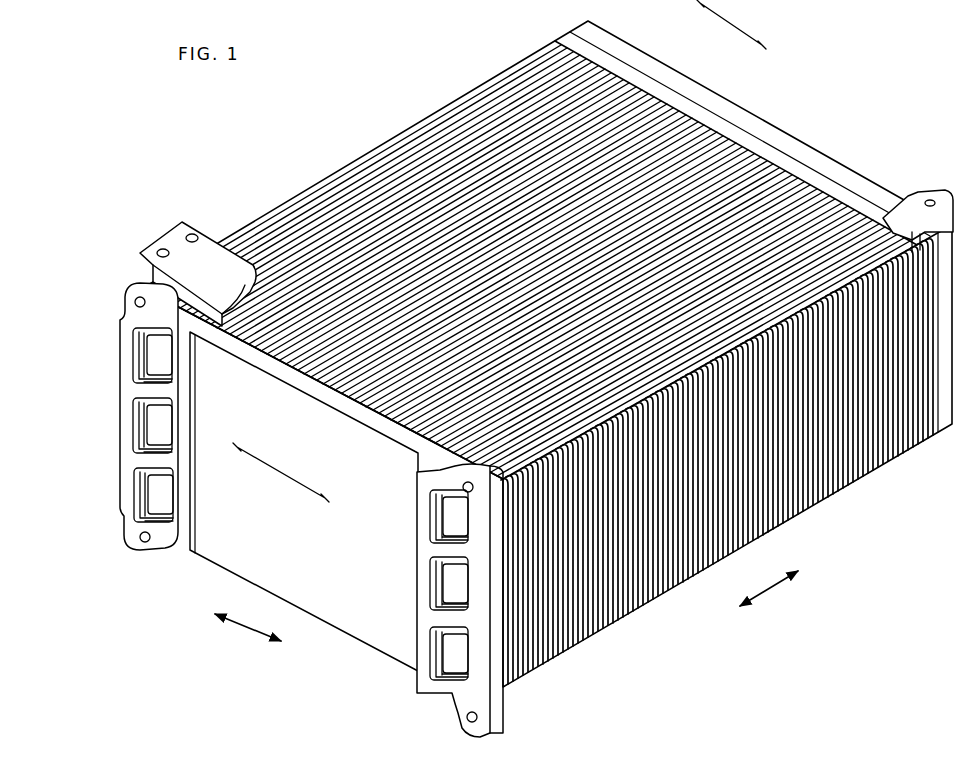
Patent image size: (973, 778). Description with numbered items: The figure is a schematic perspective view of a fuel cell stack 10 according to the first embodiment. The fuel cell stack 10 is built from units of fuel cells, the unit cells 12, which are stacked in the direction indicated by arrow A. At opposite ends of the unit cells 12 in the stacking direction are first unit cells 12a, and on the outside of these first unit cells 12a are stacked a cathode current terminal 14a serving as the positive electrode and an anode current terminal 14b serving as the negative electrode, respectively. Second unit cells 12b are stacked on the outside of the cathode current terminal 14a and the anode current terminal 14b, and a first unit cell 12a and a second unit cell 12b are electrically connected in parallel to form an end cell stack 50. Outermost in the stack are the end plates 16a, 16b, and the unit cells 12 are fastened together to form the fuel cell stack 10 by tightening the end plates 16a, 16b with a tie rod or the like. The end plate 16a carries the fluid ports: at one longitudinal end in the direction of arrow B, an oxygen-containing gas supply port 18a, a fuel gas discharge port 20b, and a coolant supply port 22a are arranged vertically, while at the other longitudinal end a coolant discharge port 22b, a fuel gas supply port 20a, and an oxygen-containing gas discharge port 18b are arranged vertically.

The fuel cell stack 10 is at (101, 143).
The unit cells 12 is at (328, 166).
The first unit cells 12a is at (289, 352).
The second unit cells 12b is at (337, 403).
The cathode current terminal 14a is at (165, 248).
The anode current terminal 14b is at (916, 218).
The end plate 16a is at (336, 612).
The end plate 16b is at (790, 106).
The oxygen-containing gas supply port 18a is at (137, 362).
The oxygen-containing gas discharge port 18b is at (456, 652).
The fuel gas supply port 20a is at (447, 586).
The fuel gas discharge port 20b is at (137, 424).
The coolant supply port 22a is at (139, 498).
The coolant discharge port 22b is at (447, 518).
The end cell stack 50 is at (499, 254).